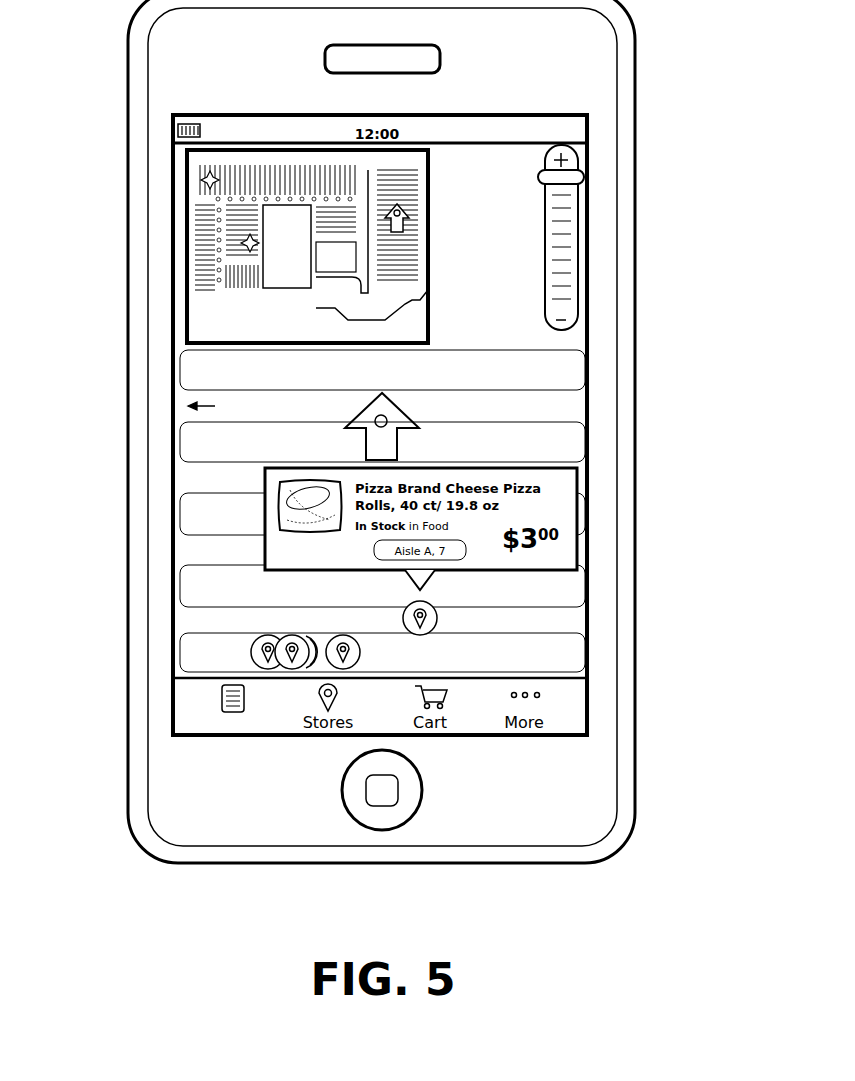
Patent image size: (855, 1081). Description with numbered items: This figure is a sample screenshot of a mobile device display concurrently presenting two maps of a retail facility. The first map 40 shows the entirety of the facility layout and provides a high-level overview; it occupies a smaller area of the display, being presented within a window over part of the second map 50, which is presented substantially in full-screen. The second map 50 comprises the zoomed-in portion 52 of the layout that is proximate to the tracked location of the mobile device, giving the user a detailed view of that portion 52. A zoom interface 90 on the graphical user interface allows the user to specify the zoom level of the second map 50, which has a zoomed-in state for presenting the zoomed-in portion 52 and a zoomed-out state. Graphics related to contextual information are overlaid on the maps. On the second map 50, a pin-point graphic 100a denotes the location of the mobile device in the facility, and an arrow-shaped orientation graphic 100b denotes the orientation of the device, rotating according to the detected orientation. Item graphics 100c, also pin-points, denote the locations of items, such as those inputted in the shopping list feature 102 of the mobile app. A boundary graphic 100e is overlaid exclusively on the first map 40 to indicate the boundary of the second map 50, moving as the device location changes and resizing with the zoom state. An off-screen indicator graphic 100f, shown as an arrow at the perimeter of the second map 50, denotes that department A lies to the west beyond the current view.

The first map 40 is at (386, 231).
The second map 50 is at (197, 622).
The zoomed-in portion 52 is at (566, 614).
The zoom interface 90 is at (580, 210).
The location graphic 100a is at (472, 275).
The orientation graphic 100b is at (405, 217).
The item graphic 100c is at (246, 243).
The boundary graphic 100e is at (430, 200).
The off-screen indicator graphic 100f is at (207, 397).
The shopping list feature 102 is at (247, 698).